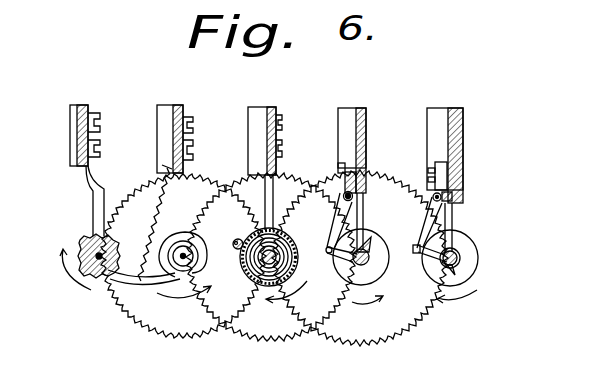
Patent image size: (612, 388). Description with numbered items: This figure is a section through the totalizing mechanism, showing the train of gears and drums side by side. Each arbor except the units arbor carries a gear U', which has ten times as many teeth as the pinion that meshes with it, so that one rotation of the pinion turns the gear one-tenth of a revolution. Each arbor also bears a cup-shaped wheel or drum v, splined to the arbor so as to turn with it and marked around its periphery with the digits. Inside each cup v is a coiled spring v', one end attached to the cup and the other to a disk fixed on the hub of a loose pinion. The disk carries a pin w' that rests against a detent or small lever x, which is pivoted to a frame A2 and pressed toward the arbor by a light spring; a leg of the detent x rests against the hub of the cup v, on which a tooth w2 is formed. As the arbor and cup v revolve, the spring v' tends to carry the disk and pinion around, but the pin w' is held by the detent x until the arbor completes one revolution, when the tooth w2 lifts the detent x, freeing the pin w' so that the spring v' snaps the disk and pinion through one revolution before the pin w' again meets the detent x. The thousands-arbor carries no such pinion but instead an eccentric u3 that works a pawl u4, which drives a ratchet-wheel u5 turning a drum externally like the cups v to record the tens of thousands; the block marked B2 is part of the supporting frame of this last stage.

The frame A2 is at (372, 131).
The slide block B2 is at (445, 180).
The gear U' is at (274, 263).
The eccentric u3 is at (202, 264).
The pawl u4 is at (152, 230).
The ratchet-wheel u5 is at (82, 244).
The cup-shaped wheel or drum v is at (362, 261).
The coiled spring v' is at (269, 253).
The pin w' is at (332, 252).
The tooth w2 is at (365, 250).
The detent or small lever x is at (236, 241).